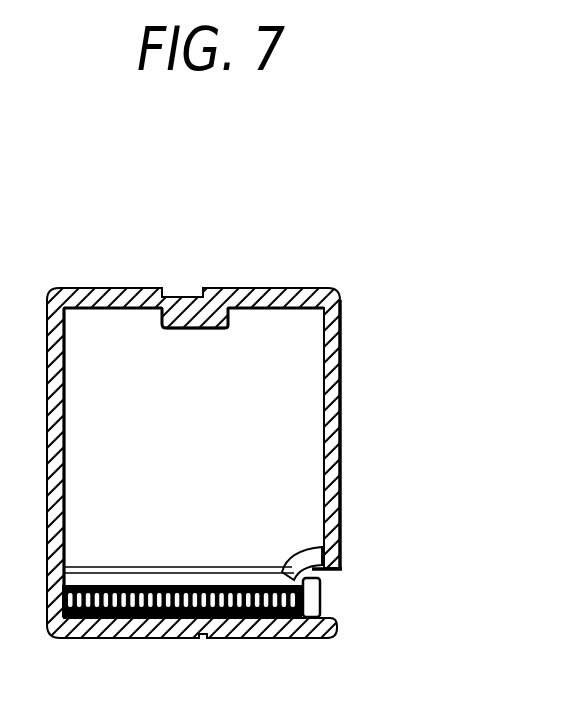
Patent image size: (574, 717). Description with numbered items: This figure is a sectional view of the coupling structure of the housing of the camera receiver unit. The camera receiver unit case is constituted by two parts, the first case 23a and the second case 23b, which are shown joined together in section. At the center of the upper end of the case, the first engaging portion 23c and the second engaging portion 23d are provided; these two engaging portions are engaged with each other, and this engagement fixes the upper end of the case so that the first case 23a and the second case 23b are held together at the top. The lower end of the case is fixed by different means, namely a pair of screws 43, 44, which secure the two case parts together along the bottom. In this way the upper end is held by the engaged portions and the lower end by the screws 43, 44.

The first case 23a is at (65, 288).
The second case 23b is at (333, 292).
The first engaging portion 23c is at (162, 290).
The second engaging portion 23d is at (190, 329).
The screw 43 is at (261, 597).
The screw 44 is at (322, 593).